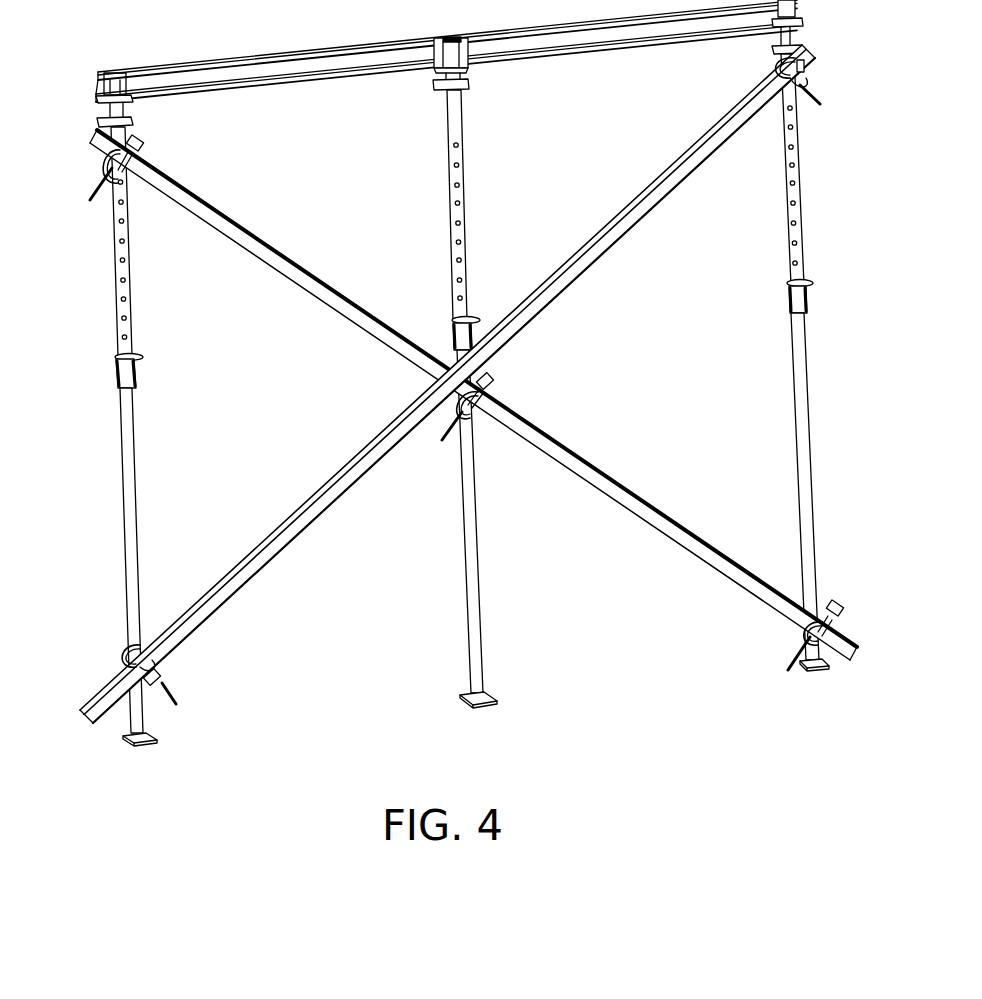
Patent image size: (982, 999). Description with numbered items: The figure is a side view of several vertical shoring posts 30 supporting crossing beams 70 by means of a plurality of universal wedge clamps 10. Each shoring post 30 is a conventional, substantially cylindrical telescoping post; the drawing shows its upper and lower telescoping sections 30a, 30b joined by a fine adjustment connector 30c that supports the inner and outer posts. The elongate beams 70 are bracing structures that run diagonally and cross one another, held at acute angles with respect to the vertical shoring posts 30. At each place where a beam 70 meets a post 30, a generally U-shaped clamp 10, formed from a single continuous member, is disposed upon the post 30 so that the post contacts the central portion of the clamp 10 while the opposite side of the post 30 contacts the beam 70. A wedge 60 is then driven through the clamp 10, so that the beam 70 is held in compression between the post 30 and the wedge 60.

The clamp 10 is at (103, 162).
The shoring post 30 is at (432, 373).
The upper tube of post 30a is at (112, 307).
The lower tube of post 30b is at (128, 482).
The adjustment collar 30c is at (134, 371).
The wedge 60 is at (146, 160).
The beam 70 is at (222, 208).